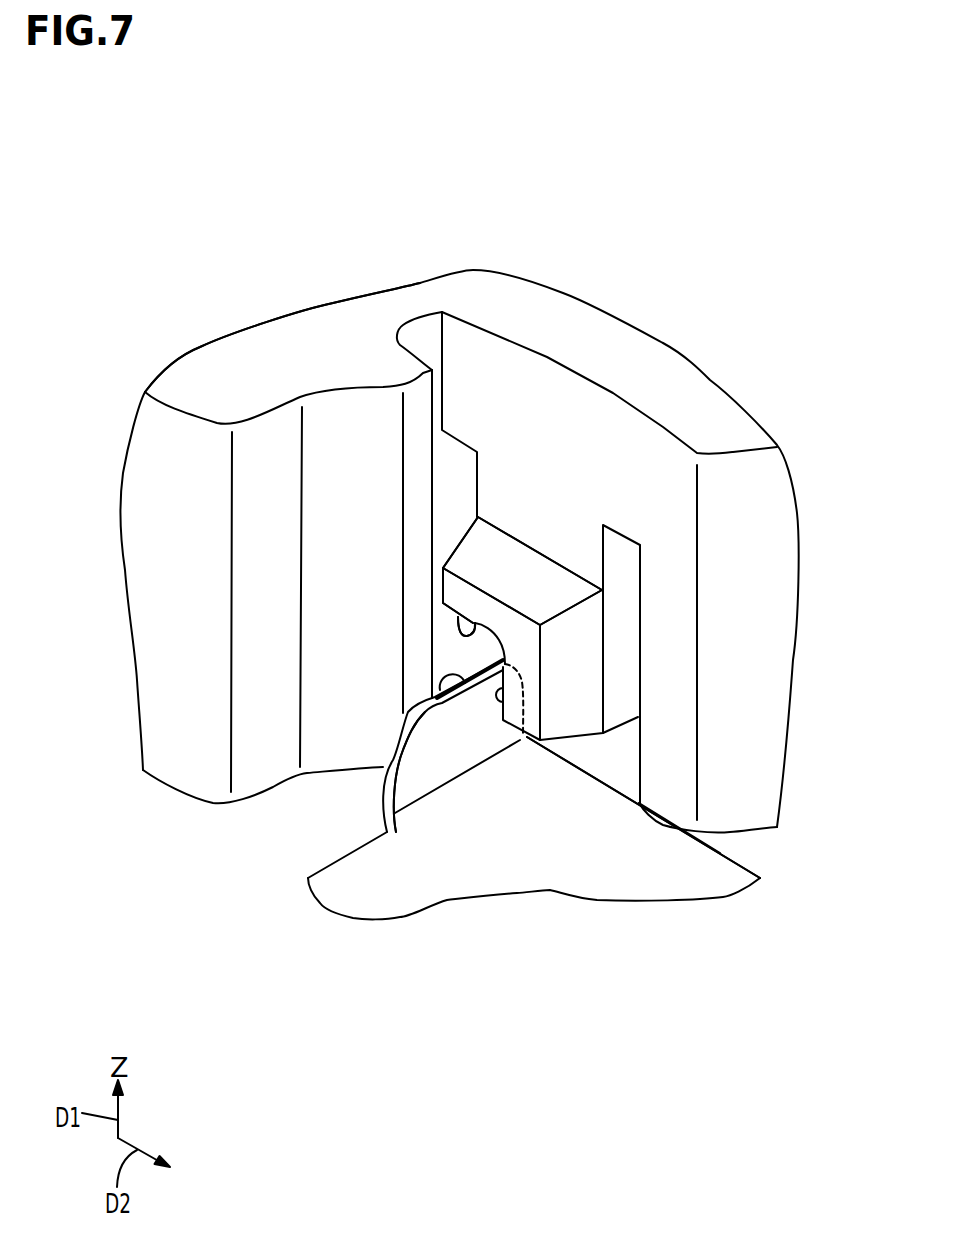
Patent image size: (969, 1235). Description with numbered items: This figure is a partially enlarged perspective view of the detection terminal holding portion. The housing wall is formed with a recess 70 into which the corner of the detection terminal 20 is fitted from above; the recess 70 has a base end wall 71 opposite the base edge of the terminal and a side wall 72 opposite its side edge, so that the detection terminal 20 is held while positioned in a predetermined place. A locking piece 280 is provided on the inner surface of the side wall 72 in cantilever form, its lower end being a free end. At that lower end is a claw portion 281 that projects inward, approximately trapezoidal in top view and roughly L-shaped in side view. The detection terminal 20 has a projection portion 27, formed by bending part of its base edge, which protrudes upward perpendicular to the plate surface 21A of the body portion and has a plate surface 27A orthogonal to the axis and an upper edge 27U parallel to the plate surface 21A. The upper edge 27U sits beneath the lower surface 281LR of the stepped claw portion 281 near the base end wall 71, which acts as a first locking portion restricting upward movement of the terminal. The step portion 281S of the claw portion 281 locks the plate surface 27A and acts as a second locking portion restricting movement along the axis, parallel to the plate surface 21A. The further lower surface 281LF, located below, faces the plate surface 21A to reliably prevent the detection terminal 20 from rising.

The recess 70 is at (395, 303).
The base end wall 71 is at (279, 362).
The side wall 72 is at (511, 335).
The locking piece 280 is at (537, 517).
The claw portion 281 is at (542, 590).
The lower surface 281LR is at (462, 615).
The lower surface 281LF is at (525, 737).
The step portion 281S is at (503, 707).
The projection portion 27 is at (387, 777).
The upper edge 27U is at (437, 698).
The plate surface 27A is at (470, 740).
The detection terminal 20 is at (660, 878).
The plate surface 21A is at (712, 875).